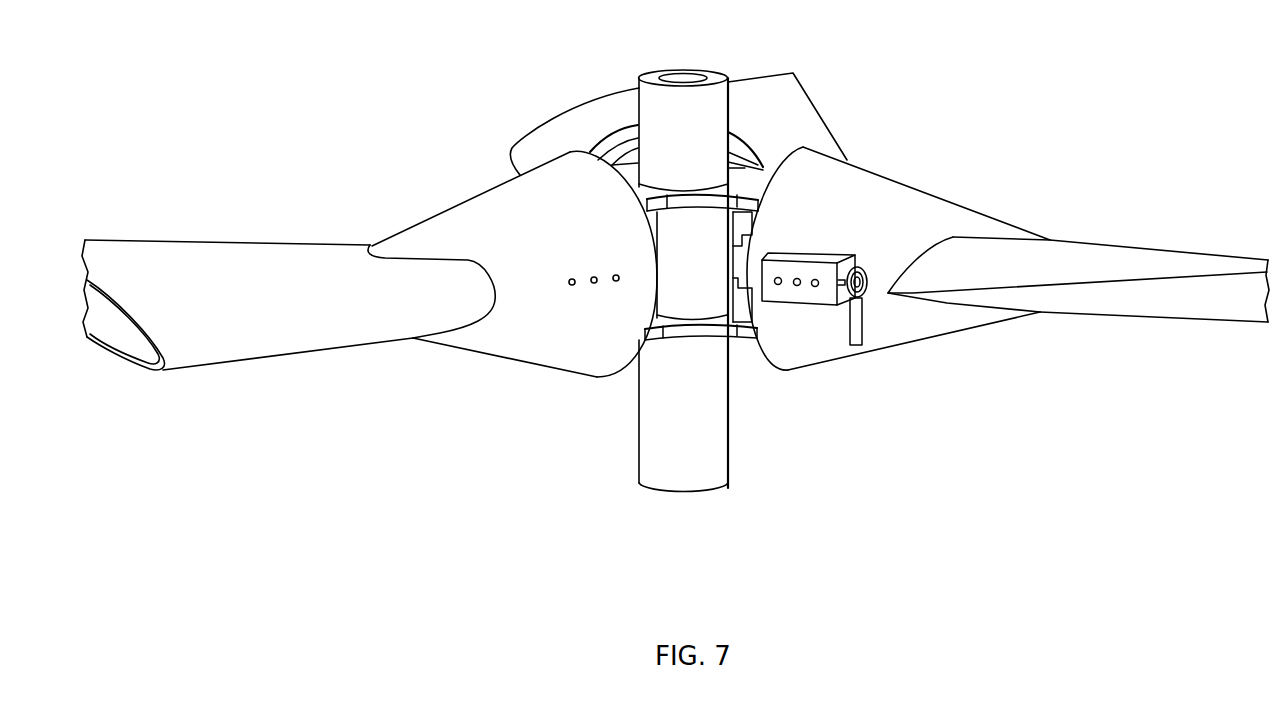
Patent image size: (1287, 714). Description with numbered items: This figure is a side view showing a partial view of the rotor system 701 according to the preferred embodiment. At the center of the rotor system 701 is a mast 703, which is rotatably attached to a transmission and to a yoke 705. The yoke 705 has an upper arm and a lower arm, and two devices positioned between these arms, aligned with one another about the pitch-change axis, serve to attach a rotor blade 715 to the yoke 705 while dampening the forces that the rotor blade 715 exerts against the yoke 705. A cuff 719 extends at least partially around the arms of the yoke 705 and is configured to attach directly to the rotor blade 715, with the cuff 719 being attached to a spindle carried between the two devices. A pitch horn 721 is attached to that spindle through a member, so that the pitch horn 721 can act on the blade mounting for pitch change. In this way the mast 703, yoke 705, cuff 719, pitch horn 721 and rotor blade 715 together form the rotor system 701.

The rotor system 701 is at (320, 60).
The mast 703 is at (638, 467).
The yoke 705 is at (771, 153).
The rotor blade 715 is at (1075, 315).
The cuff 719 is at (900, 347).
The pitch horn 721 is at (792, 305).